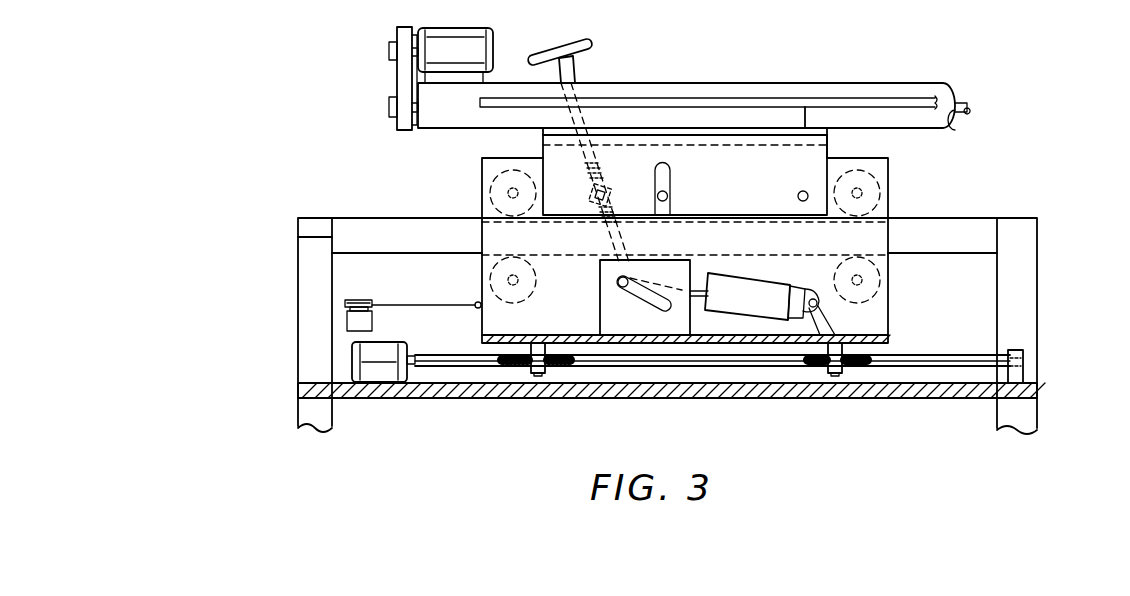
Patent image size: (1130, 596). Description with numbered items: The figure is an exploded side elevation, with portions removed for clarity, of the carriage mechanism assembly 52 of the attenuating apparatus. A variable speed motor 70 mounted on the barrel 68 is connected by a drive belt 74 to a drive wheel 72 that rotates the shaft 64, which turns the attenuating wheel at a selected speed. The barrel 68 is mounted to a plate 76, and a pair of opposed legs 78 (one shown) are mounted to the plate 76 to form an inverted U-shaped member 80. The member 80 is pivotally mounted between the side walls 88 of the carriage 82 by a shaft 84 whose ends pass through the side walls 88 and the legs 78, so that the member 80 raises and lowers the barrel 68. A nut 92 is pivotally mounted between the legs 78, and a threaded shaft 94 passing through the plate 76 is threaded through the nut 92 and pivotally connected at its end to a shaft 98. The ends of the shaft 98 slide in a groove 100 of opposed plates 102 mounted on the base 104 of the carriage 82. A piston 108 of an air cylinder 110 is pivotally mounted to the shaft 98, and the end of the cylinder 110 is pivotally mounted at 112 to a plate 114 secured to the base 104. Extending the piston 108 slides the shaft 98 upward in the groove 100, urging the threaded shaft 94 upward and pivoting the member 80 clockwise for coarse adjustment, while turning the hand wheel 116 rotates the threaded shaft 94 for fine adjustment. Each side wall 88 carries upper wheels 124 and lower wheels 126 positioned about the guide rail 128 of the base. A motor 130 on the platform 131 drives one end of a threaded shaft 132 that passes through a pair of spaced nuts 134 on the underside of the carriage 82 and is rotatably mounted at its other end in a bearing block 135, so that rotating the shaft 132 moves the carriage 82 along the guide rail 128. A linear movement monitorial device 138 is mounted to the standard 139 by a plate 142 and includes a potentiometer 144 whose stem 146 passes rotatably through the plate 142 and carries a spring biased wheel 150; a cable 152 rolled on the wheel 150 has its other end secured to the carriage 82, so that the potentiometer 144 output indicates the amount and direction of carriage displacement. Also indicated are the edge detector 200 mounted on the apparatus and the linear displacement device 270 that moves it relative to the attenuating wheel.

The frame 52 is at (272, 221).
The shaft 64 is at (962, 103).
The barrel 68 is at (704, 83).
The variable speed motor 70 is at (478, 30).
The drive wheel 72 is at (397, 85).
The drive belt 74 is at (403, 27).
The plate 76 is at (830, 135).
The legs 78 is at (737, 182).
The inverted U-shaped member 80 is at (534, 147).
The carriage 82 is at (898, 199).
The shaft 84 is at (797, 196).
The side walls 88 is at (888, 258).
The nut 92 is at (590, 198).
The threaded shaft 94 is at (576, 76).
The shaft 98 is at (612, 282).
The groove 100 is at (645, 297).
The plates 102 is at (694, 326).
The base 104 is at (888, 338).
The piston 108 is at (695, 262).
The air cylinder 110 is at (767, 272).
The pivot mounting 112 is at (811, 298).
The plate 114 is at (827, 320).
The hand wheel 116 is at (562, 44).
The upper wheels 124 is at (497, 187).
The lower wheels 126 is at (492, 274).
The guide rail 128 is at (298, 237).
The motor 130 is at (352, 360).
The platform 131 is at (432, 384).
The threaded shaft 132 is at (472, 367).
The nuts 134 is at (538, 374).
The bearing block 135 is at (1018, 380).
The linear movement monitorial device 138 is at (322, 313).
The standard 139 is at (296, 255).
The plate 142 is at (340, 305).
The potentiometer 144 is at (373, 322).
The stem 146 is at (345, 322).
The spring biased wheel 150 is at (355, 300).
The cable 152 is at (403, 304).
The edge detector 200 is at (881, 92).
The linear displacement device 270 is at (820, 112).